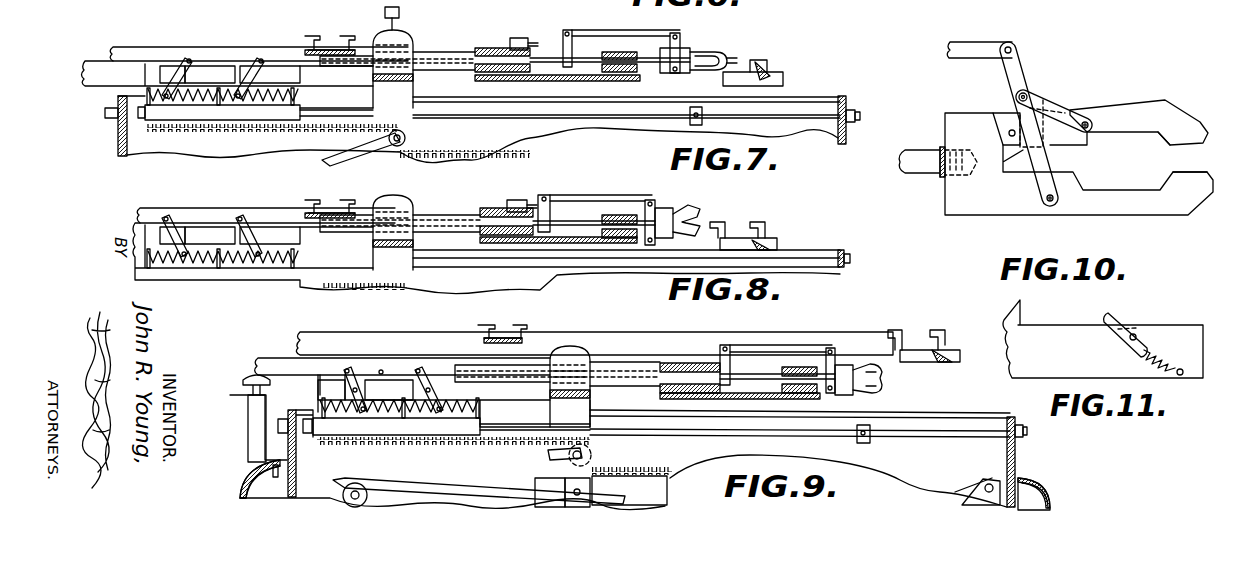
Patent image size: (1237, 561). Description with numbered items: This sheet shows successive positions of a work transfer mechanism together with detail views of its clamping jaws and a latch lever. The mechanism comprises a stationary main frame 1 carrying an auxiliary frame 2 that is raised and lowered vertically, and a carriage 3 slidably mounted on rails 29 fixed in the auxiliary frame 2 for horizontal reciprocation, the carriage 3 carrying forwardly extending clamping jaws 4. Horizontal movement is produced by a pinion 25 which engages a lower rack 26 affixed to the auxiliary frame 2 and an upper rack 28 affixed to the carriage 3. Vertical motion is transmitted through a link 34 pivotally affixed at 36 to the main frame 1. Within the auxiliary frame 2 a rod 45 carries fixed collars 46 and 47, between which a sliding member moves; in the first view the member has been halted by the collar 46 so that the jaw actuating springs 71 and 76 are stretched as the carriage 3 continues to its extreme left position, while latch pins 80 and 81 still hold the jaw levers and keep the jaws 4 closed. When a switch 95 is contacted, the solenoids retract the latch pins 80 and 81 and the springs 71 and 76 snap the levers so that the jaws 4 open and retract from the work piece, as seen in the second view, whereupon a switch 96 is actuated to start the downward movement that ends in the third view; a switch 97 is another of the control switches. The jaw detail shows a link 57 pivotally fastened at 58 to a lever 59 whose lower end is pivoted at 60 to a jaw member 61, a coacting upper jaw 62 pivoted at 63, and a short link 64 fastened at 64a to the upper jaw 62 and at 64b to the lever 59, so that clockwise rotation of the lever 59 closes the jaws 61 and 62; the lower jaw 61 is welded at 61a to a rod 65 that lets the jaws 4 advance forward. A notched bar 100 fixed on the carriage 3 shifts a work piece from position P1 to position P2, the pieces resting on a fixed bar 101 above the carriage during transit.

In FIG. 9, the main frame 1 is at (1046, 497).
In FIG. 7, the auxiliary frame 2 is at (845, 101).
In FIG. 8, the auxiliary frame 2 is at (845, 262).
In FIG. 9, the auxiliary frame 2 is at (1016, 473).
In FIG. 7, the carriage 3 is at (413, 44).
In FIG. 8, the carriage 3 is at (393, 232).
In FIG. 9, the carriage 3 is at (570, 386).
In FIG. 7, the clamping jaws 4 is at (698, 60).
In FIG. 8, the clamping jaws 4 is at (694, 211).
In FIG. 9, the clamping jaws 4 is at (872, 374).
In FIG. 10, the clamping jaws 4 is at (1164, 174).
In FIG. 7, the pinion 25 is at (407, 138).
In FIG. 9, the pinion 25 is at (592, 453).
In FIG. 7, the lower rack 26 is at (476, 148).
In FIG. 9, the lower rack 26 is at (648, 468).
In FIG. 7, the upper rack 28 is at (312, 130).
In FIG. 9, the upper rack 28 is at (481, 444).
In FIG. 8, the rails 29 is at (791, 258).
In FIG. 9, the rails 29 is at (962, 414).
In FIG. 9, the link 34 is at (958, 488).
In FIG. 9, the pivot 36 is at (998, 470).
In FIG. 7, the rod 45 is at (520, 116).
In FIG. 9, the rod 45 is at (921, 438).
In FIG. 9, the collar 46 is at (304, 438).
In FIG. 7, the collar 47 is at (703, 120).
In FIG. 9, the collar 47 is at (870, 441).
In FIG. 10, the link 57 is at (980, 40).
In FIG. 10, the pivot 58 is at (1028, 48).
In FIG. 10, the lever 59 is at (1040, 76).
In FIG. 10, the pivot 60 is at (1042, 197).
In FIG. 10, the jaw member 61 is at (1164, 215).
In FIG. 10, the welded mounting 61a is at (940, 180).
In FIG. 10, the upper jaw 62 is at (1200, 114).
In FIG. 10, the pivotal mounting 63 is at (1005, 118).
In FIG. 10, the short link 64 is at (1072, 100).
In FIG. 10, the pivot 64a is at (1090, 115).
In FIG. 10, the pivot 64b is at (1038, 90).
In FIG. 10, the rod 65 is at (914, 152).
In FIG. 7, the jaw actuating spring 71 is at (195, 120).
In FIG. 7, the jaw actuating spring 76 is at (265, 120).
In FIG. 7, the latch pin 80 is at (181, 60).
In FIG. 8, the latch pin 80 is at (190, 218).
In FIG. 9, the latch pin 80 is at (355, 390).
In FIG. 7, the latch pin 81 is at (257, 60).
In FIG. 8, the latch pin 81 is at (252, 218).
In FIG. 9, the latch pin 81 is at (429, 390).
In FIG. 7, the switch 95 is at (400, 11).
In FIG. 7, the switch 96 is at (514, 38).
In FIG. 8, the switch 96 is at (490, 203).
In FIG. 9, the switch 97 is at (248, 393).
In FIG. 7, the notched bar 100 is at (139, 48).
In FIG. 8, the notched bar 100 is at (158, 212).
In FIG. 9, the notched bar 100 is at (282, 362).
In FIG. 7, the bar 101 is at (99, 69).
In FIG. 8, the bar 101 is at (486, 258).
In FIG. 9, the bar 101 is at (334, 340).
In FIG. 11, the bar 101 is at (1016, 304).
In FIG. 7, the work piece position P1 is at (763, 63).
In FIG. 8, the work piece position P1 is at (760, 225).
In FIG. 9, the work piece position P1 is at (912, 334).
In FIG. 7, the work piece position P2 is at (316, 35).
In FIG. 8, the work piece position P2 is at (302, 204).
In FIG. 9, the work piece position P2 is at (530, 336).